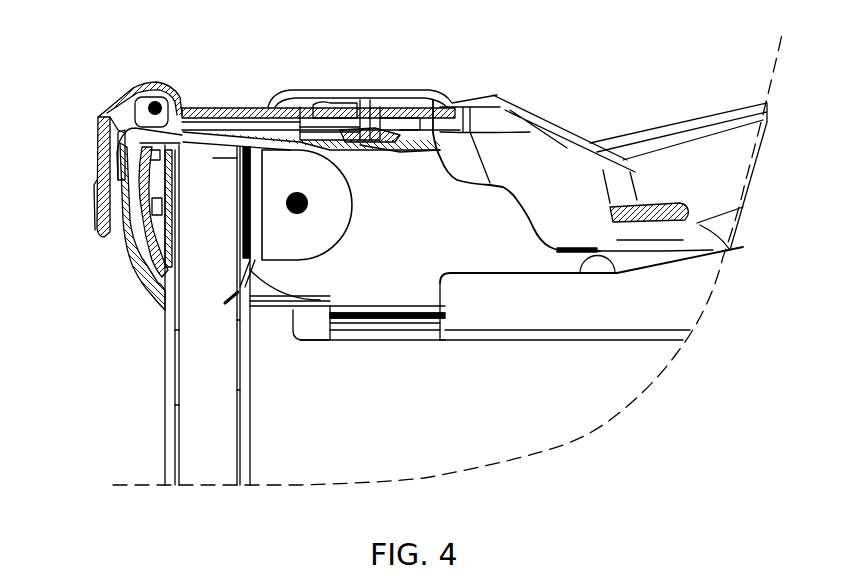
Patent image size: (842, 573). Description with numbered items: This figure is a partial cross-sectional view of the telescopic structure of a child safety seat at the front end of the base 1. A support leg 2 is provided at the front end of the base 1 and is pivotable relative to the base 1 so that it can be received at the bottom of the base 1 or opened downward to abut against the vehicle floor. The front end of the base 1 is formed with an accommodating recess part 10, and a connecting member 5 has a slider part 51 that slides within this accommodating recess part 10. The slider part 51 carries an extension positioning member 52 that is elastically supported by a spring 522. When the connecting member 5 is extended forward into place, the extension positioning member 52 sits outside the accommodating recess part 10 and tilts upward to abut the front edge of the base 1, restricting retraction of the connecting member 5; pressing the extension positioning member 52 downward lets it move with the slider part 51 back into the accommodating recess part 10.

The base 1 is at (573, 130).
The support leg 2 is at (173, 413).
The connecting member 5 is at (100, 83).
The accommodating recess part 10 is at (315, 102).
The slider part 51 is at (262, 108).
The extension positioning member 52 is at (363, 105).
The spring 522 is at (372, 136).